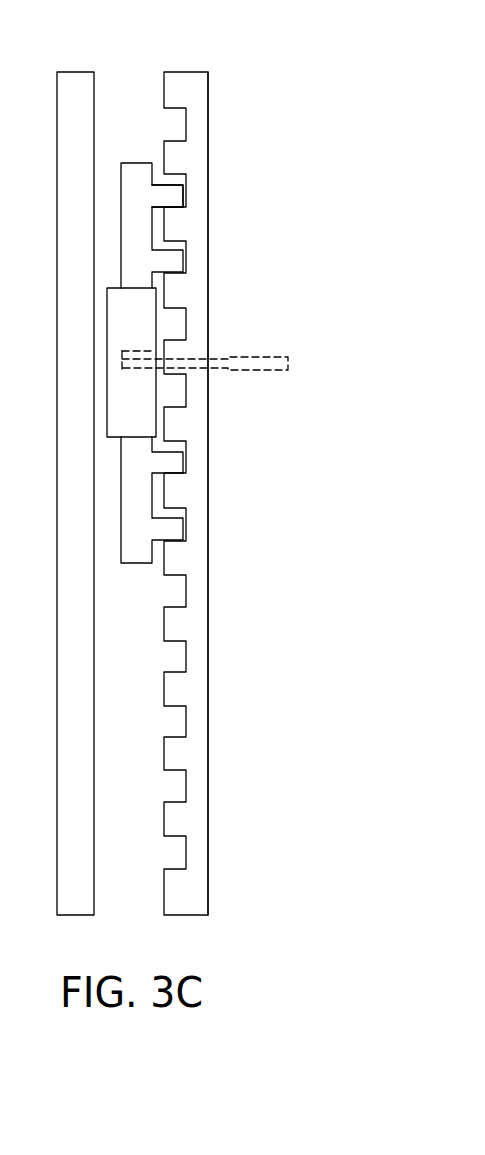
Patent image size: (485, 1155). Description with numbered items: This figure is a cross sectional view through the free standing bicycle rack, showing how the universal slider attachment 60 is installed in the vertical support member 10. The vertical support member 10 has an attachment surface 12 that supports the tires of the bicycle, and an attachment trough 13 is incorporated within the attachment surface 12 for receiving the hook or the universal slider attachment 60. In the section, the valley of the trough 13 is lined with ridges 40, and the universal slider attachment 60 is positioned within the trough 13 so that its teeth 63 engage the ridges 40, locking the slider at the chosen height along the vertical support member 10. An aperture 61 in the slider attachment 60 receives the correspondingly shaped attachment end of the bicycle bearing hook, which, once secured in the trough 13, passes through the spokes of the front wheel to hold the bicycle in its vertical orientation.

The vertical support member 10 is at (197, 688).
The attachment surface 12 is at (209, 568).
The attachment trough 13 is at (135, 93).
The ridges 40 is at (177, 292).
The universal slider attachment 60 is at (107, 327).
The aperture 61 is at (122, 361).
The teeth 63 is at (176, 195).